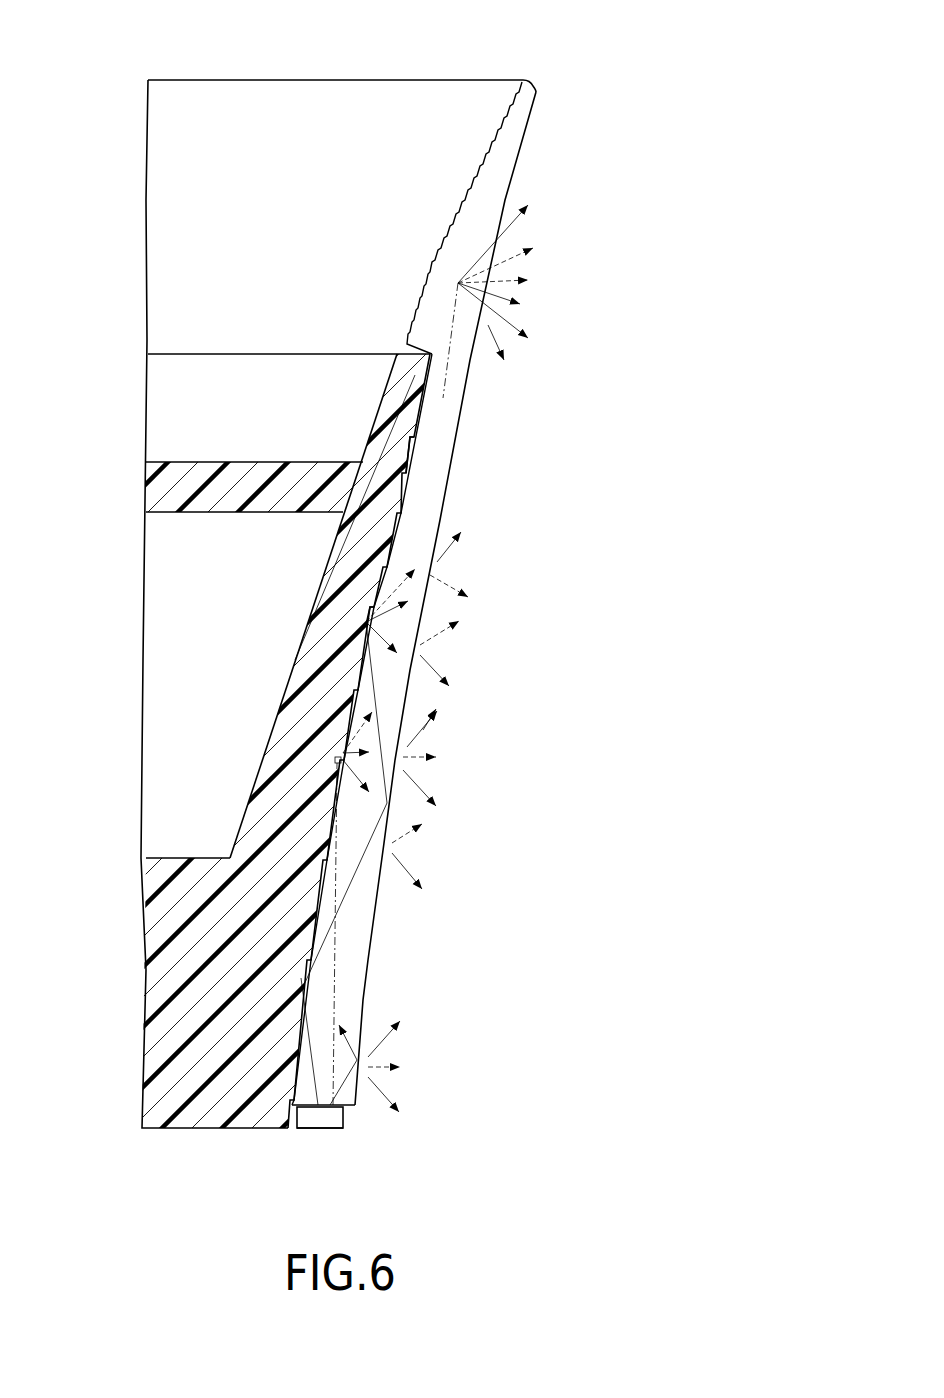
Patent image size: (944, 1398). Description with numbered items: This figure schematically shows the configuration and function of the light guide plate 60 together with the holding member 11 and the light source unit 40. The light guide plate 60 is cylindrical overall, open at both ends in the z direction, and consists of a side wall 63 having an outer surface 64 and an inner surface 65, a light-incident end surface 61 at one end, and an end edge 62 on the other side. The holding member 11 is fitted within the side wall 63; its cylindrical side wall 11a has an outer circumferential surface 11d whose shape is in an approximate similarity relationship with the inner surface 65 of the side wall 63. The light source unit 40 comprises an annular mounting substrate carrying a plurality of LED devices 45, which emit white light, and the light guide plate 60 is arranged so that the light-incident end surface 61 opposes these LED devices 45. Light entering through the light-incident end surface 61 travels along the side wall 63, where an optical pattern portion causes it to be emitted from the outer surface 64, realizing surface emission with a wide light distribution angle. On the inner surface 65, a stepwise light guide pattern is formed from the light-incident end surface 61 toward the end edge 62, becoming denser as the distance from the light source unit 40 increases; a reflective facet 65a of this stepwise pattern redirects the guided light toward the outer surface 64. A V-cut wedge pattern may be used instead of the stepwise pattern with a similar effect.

The holding member 11 is at (250, 765).
The cylindrical side wall 11a is at (318, 627).
The outer circumferential surface 11d is at (398, 508).
The light source unit 40 is at (354, 1118).
The LED device 45 is at (323, 1131).
The light guide plate 60 is at (525, 178).
The light-incident end surface 61 is at (297, 1092).
The end edge 62 is at (525, 78).
The side wall 63 is at (443, 440).
The outer surface 64 is at (420, 612).
The inner surface 65 is at (410, 417).
The reflective facet 65a is at (370, 612).